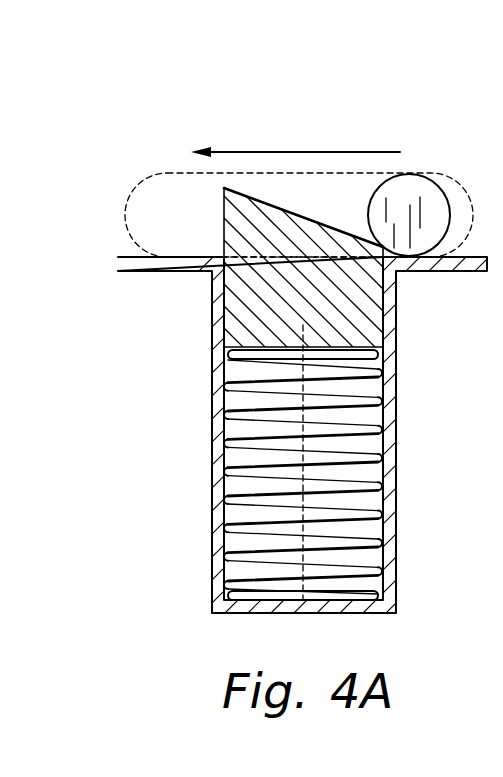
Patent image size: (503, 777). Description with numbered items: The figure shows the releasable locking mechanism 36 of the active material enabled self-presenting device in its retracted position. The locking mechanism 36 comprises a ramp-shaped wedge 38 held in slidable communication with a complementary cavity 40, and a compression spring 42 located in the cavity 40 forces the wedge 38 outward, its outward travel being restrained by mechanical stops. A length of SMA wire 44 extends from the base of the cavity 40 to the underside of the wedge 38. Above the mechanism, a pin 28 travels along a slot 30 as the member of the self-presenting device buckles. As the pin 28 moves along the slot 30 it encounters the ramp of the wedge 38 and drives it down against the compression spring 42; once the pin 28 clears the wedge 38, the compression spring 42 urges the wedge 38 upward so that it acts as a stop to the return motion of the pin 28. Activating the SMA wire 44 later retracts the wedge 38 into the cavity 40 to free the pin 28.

The pin 28 is at (417, 188).
The slot 30 is at (172, 193).
The locking mechanism 36 is at (246, 118).
The wedge 38 is at (237, 310).
The cavity 40 is at (370, 442).
The compression spring 42 is at (240, 523).
The SMA wire 44 is at (306, 555).